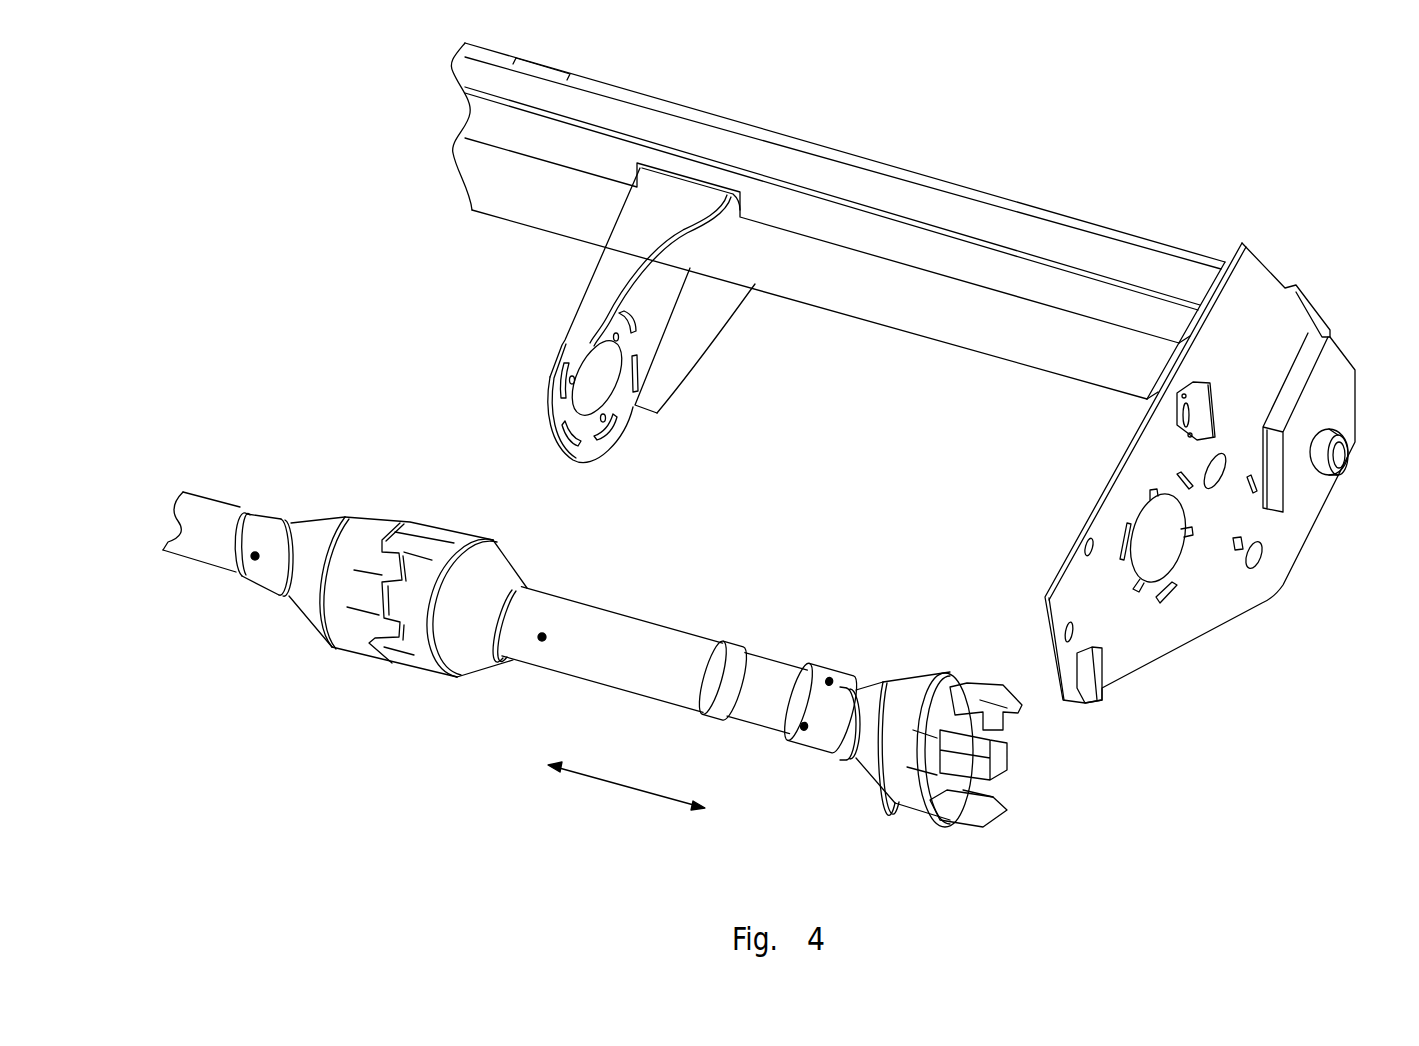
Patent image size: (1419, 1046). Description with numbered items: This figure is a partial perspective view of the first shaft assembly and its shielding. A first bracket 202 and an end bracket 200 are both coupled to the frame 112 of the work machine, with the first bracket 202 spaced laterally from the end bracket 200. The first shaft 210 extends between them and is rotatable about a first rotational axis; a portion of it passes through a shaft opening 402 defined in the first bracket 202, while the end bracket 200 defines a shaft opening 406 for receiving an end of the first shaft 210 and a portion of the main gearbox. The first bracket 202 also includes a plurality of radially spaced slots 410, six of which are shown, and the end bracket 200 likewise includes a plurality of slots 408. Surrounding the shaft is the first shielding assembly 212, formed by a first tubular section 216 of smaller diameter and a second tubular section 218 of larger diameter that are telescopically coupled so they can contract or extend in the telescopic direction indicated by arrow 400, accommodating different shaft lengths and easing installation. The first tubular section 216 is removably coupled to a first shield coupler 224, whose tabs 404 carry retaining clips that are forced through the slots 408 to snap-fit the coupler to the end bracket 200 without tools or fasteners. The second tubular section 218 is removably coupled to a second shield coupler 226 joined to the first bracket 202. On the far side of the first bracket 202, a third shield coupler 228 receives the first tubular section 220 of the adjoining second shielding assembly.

The frame 112 is at (962, 213).
The end bracket 200 is at (1187, 479).
The first bracket 202 is at (607, 300).
The first shaft 210 is at (1007, 758).
The first shielding assembly 212 is at (650, 660).
The first tubular section 216 is at (770, 713).
The second tubular section 218 is at (672, 647).
The first tubular section 220 is at (207, 515).
The first shield coupler 224 is at (997, 738).
The second shield coupler 226 is at (477, 648).
The third shield coupler 228 is at (380, 523).
The arrow 400 is at (625, 790).
The shaft opening 402 is at (596, 386).
The tabs 404 is at (940, 740).
The shaft opening 406 is at (1154, 545).
The slots 408 is at (1178, 480).
The slots 410 is at (632, 320).